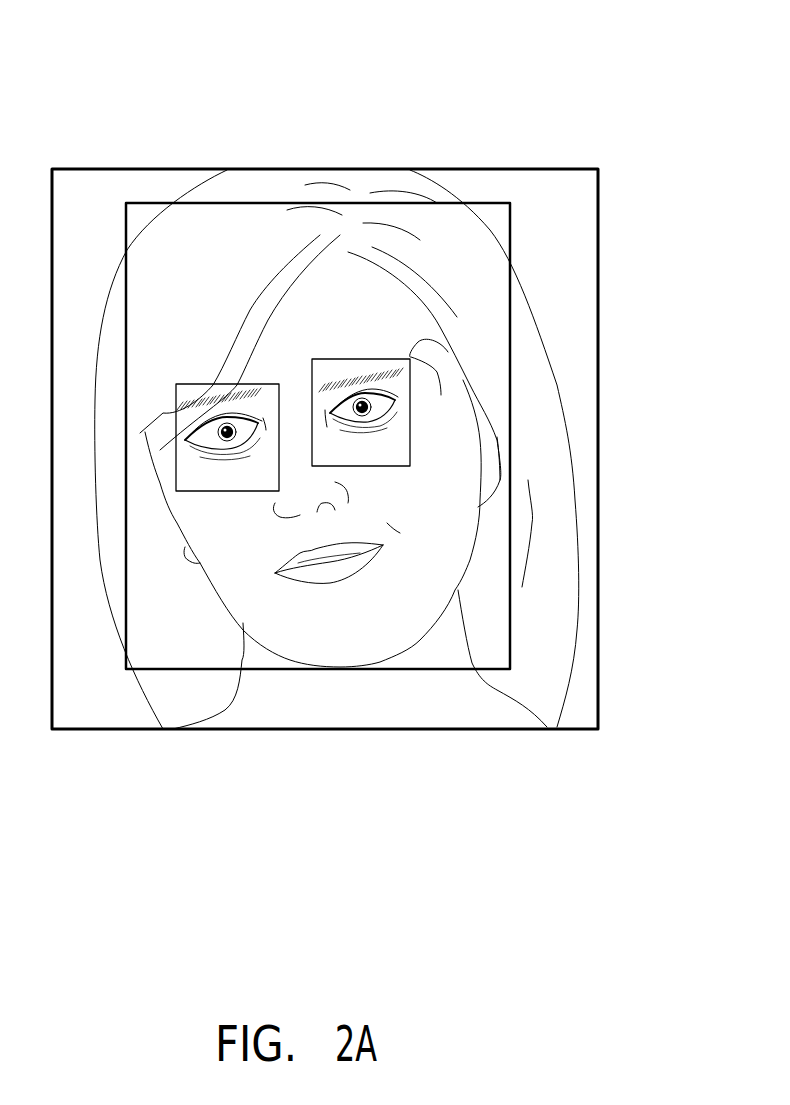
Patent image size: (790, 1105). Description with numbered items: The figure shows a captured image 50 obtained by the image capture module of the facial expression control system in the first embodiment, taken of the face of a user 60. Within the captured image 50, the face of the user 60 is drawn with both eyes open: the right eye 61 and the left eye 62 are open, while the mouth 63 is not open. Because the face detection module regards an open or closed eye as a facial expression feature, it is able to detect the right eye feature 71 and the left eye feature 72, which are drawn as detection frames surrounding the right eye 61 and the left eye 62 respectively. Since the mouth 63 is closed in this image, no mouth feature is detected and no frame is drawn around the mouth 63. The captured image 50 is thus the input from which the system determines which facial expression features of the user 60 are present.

The captured image 50 is at (610, 82).
The user 60 is at (268, 670).
The right eye 61 is at (220, 450).
The left eye 62 is at (386, 423).
The mouth 63 is at (365, 564).
The right eye feature 71 is at (177, 402).
The left eye feature 72 is at (410, 359).